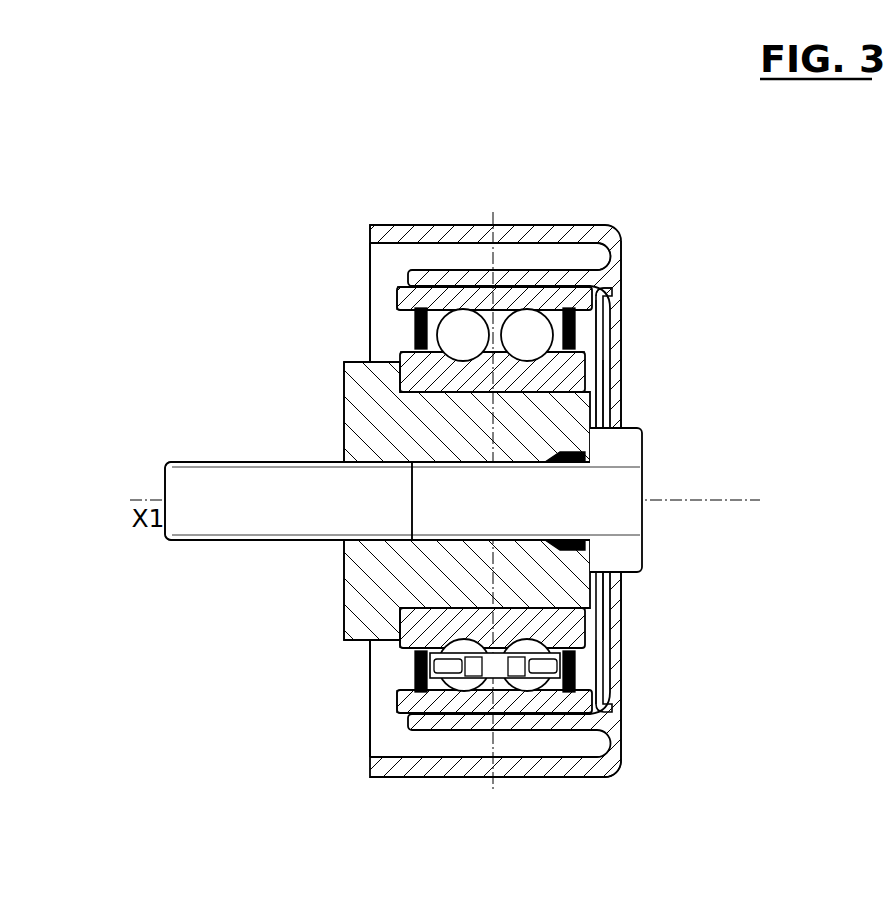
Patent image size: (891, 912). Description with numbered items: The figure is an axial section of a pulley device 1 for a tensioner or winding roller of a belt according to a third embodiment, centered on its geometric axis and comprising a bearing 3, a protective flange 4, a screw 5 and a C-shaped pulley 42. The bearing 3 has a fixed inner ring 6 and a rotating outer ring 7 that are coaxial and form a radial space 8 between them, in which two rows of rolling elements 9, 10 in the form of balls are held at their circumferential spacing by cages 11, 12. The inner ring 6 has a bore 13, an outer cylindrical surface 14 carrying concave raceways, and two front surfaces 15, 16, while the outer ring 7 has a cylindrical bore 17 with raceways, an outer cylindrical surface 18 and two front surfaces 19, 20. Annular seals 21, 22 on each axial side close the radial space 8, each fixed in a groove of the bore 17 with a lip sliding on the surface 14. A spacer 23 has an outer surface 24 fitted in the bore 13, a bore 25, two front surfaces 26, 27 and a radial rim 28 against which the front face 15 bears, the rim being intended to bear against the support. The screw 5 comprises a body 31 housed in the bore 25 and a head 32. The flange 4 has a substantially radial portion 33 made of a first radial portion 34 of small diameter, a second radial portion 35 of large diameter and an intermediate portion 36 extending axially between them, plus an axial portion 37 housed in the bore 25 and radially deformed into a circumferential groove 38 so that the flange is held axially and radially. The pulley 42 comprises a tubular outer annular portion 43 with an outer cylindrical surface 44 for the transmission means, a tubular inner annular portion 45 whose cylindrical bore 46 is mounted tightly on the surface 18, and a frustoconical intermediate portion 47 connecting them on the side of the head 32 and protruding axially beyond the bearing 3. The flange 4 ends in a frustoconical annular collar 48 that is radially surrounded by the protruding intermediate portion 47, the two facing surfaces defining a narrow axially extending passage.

The pulley device 1 is at (215, 352).
The bearing 3 is at (360, 304).
The protective flange 4 is at (620, 716).
The screw 5 is at (185, 552).
The inner ring 6 is at (420, 378).
The outer ring 7 is at (452, 760).
The radial space 8 is at (477, 286).
The rolling elements 9 is at (456, 349).
The rolling elements 10 is at (514, 349).
The cage 11 is at (440, 735).
The cage 12 is at (530, 745).
The bore 13 is at (400, 407).
The outer cylindrical surface 14 is at (397, 685).
The front surface 15 is at (400, 650).
The front surface 16 is at (612, 665).
The cylindrical bore 17 is at (413, 330).
The outer cylindrical surface 18 is at (435, 233).
The front surface 19 is at (383, 308).
The front surface 20 is at (613, 268).
The annular seal 21 is at (408, 700).
The annular seal 22 is at (586, 740).
The spacer 23 is at (332, 596).
The outer surface 24 is at (397, 632).
The bore 25 is at (385, 462).
The front surface 26 is at (343, 563).
The front surface 27 is at (614, 610).
The radial rim 28 is at (343, 445).
The body 31 is at (163, 480).
The head 32 is at (625, 550).
The substantially radial portion 33 is at (762, 345).
The first radial portion 34 is at (614, 378).
The second radial portion 35 is at (612, 296).
The intermediate portion 36 is at (606, 346).
The axial portion 37 is at (565, 460).
The circumferential groove 38 is at (565, 540).
The C-shaped pulley 42 is at (397, 218).
The outer annular portion 43 is at (437, 270).
The outer cylindrical surface 44 is at (482, 775).
The inner annular portion 45 is at (505, 300).
The cylindrical bore 46 is at (566, 306).
The intermediate portion 47 is at (622, 768).
The frustoconical annular collar 48 is at (623, 240).